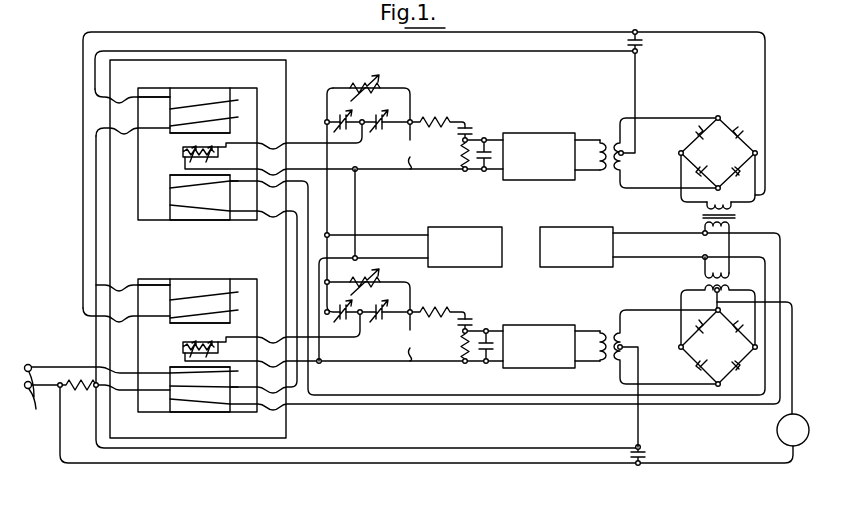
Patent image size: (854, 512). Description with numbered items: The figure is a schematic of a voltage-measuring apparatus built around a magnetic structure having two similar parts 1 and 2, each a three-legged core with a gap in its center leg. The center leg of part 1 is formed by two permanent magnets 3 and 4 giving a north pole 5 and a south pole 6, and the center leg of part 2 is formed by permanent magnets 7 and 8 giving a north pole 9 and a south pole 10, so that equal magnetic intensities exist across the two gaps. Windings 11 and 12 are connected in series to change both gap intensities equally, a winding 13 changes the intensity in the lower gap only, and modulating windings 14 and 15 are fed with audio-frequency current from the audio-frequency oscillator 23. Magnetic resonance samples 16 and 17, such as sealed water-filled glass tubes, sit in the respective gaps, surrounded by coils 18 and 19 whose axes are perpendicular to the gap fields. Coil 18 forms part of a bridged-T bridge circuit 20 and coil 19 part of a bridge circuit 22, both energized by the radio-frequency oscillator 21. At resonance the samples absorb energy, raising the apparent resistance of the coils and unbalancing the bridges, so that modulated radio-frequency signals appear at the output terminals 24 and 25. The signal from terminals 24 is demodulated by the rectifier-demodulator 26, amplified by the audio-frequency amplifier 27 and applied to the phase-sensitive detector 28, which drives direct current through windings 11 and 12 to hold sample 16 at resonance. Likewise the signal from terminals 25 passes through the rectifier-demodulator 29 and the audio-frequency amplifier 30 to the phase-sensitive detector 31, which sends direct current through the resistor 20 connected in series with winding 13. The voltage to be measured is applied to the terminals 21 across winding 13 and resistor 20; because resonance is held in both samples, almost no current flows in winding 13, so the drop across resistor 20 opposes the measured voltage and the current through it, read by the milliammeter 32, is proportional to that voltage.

The magnetic structure part 1 is at (117, 172).
The magnetic structure part 2 is at (119, 343).
The permanent magnet 3 is at (234, 105).
The permanent magnet 4 is at (170, 184).
The north pole 5 is at (224, 133).
The south pole 6 is at (179, 174).
The permanent magnet 7 is at (236, 300).
The permanent magnet 8 is at (170, 390).
The north pole 9 is at (228, 324).
The south pole 10 is at (179, 366).
The winding 11 is at (167, 110).
The winding 12 is at (168, 300).
The winding 13 is at (170, 374).
The modulating winding 14 is at (168, 205).
The modulating winding 15 is at (170, 400).
The magnetic resonance sample 16 is at (220, 153).
The magnetic resonance sample 17 is at (220, 347).
The coil 18 is at (183, 150).
The coil 19 is at (186, 342).
The resistor / bridge circuit 20 is at (369, 123).
The terminals / radio-frequency oscillator 21 is at (460, 227).
The bridge circuit 22 is at (376, 318).
The audio-frequency oscillator 23 is at (575, 227).
The output terminals 24 is at (395, 193).
The output terminals 25 is at (395, 315).
The rectifier-demodulator 26 is at (467, 125).
The audio-frequency amplifier 27 is at (539, 133).
The phase-sensitive detector 28 is at (718, 194).
The rectifier-demodulator 29 is at (467, 326).
The audio-frequency amplifier 30 is at (537, 325).
The phase-sensitive detector 31 is at (718, 321).
The milliammeter 32 is at (775, 430).